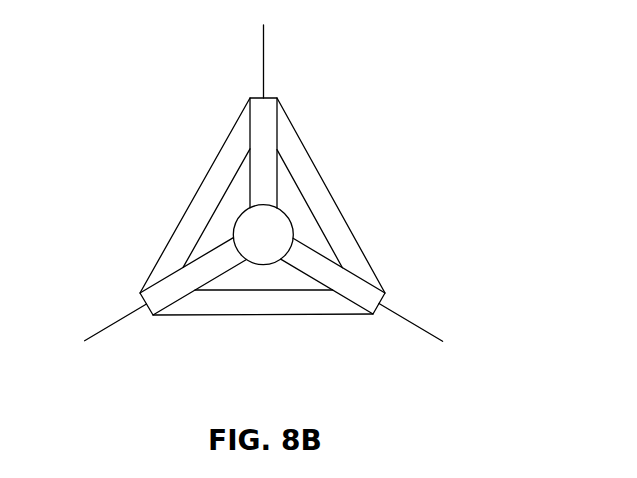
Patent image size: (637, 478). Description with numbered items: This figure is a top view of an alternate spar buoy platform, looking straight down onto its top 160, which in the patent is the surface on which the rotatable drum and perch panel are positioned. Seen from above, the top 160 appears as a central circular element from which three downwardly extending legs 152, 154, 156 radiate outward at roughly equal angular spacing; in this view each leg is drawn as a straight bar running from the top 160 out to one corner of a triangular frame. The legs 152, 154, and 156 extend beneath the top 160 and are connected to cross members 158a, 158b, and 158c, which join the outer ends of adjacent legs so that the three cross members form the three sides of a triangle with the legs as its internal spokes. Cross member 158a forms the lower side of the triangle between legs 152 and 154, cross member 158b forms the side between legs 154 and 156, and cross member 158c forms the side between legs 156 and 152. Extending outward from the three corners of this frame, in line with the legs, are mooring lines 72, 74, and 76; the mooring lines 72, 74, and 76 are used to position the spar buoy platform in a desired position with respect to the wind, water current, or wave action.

The mooring line 72 is at (102, 330).
The mooring line 74 is at (418, 327).
The mooring line 76 is at (262, 57).
The leg 152 is at (215, 262).
The leg 154 is at (310, 258).
The leg 156 is at (263, 170).
The cross member 158a is at (305, 303).
The cross member 158b is at (315, 190).
The cross member 158c is at (210, 190).
The top 160 is at (268, 247).